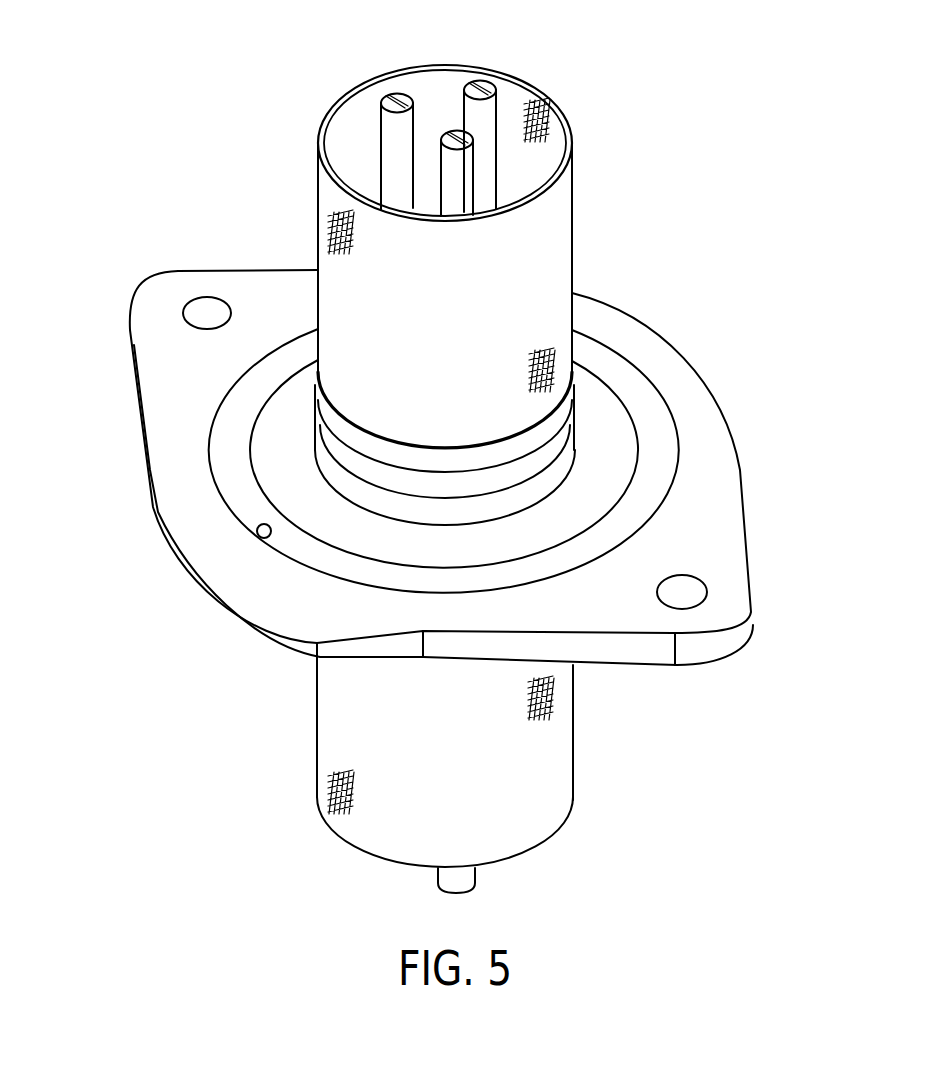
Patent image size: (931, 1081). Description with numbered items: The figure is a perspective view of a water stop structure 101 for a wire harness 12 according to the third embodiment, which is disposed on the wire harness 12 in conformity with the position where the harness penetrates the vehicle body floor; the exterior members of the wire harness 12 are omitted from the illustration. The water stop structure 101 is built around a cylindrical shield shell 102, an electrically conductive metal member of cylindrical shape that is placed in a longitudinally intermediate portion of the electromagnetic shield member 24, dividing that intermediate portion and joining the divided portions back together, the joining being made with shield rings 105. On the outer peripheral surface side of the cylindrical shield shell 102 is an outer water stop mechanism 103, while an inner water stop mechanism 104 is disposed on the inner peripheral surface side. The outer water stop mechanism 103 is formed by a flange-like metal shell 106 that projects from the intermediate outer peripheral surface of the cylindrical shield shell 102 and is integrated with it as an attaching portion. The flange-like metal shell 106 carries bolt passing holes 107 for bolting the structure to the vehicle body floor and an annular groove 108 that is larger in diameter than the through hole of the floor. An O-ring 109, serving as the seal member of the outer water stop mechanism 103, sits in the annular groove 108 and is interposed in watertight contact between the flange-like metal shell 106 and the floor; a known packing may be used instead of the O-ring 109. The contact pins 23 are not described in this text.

The wire harness 12 is at (304, 73).
The contact pins 23 is at (397, 100).
The electromagnetic shield member 24 is at (553, 232).
The water stop structure 101 is at (705, 282).
The cylindrical shield shell 102 is at (503, 505).
The outer water stop mechanism 103 is at (67, 520).
The inner water stop mechanism 104 is at (543, 487).
The shield ring 105 is at (565, 413).
The flange-like metal shell 106 is at (173, 487).
The bolt passing hole 107 is at (207, 312).
The annular groove 108 is at (270, 540).
The O-ring 109 is at (235, 497).